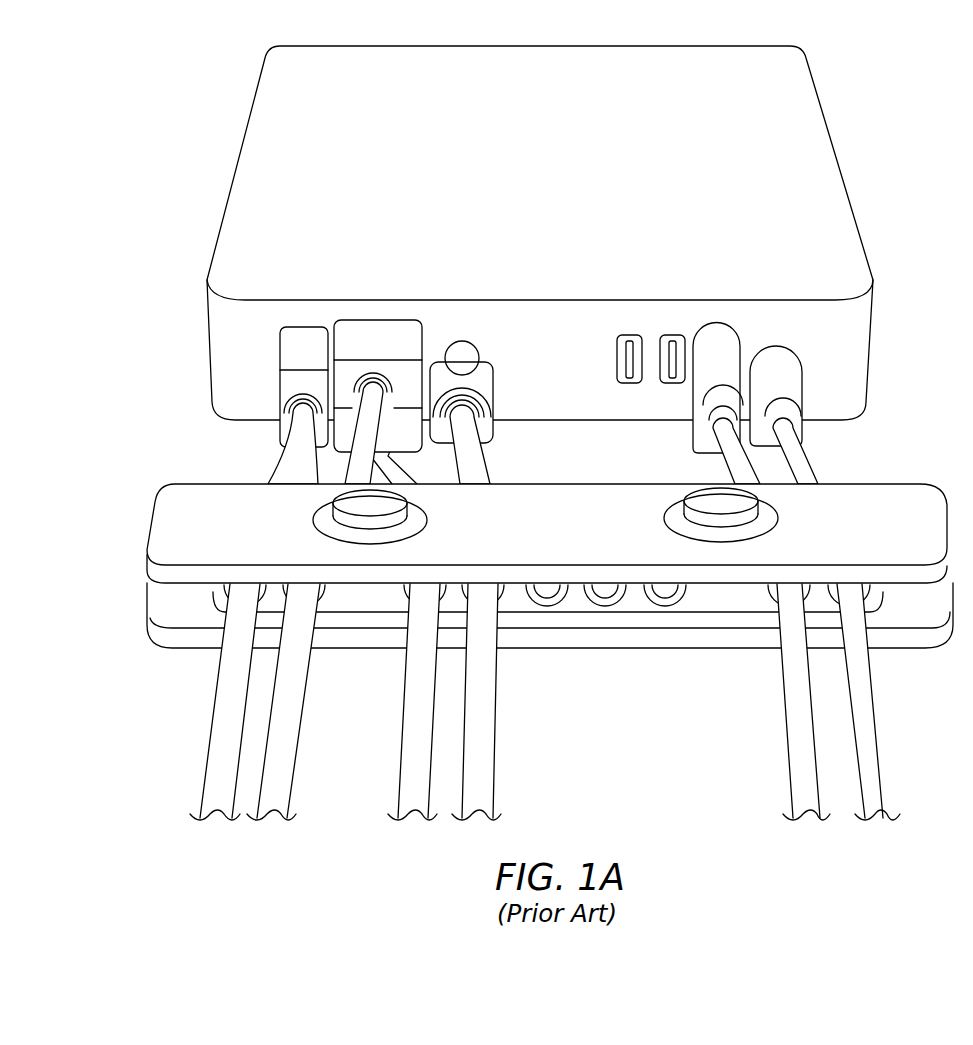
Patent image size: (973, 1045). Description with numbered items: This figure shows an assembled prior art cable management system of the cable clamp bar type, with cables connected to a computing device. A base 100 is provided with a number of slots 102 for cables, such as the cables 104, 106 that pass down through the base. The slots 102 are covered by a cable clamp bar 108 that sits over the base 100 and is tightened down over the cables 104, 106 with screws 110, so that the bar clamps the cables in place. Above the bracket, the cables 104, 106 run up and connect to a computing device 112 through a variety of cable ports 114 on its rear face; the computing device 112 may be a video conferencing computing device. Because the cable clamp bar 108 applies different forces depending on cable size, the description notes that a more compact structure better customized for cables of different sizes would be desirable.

The base 100 is at (173, 605).
The slots 102 is at (601, 608).
The cables 104 is at (862, 715).
The cables 106 is at (223, 725).
The cable clamp bar 108 is at (195, 512).
The screws 110 is at (378, 506).
The computing device 112 is at (817, 212).
The cable ports 114 is at (617, 347).